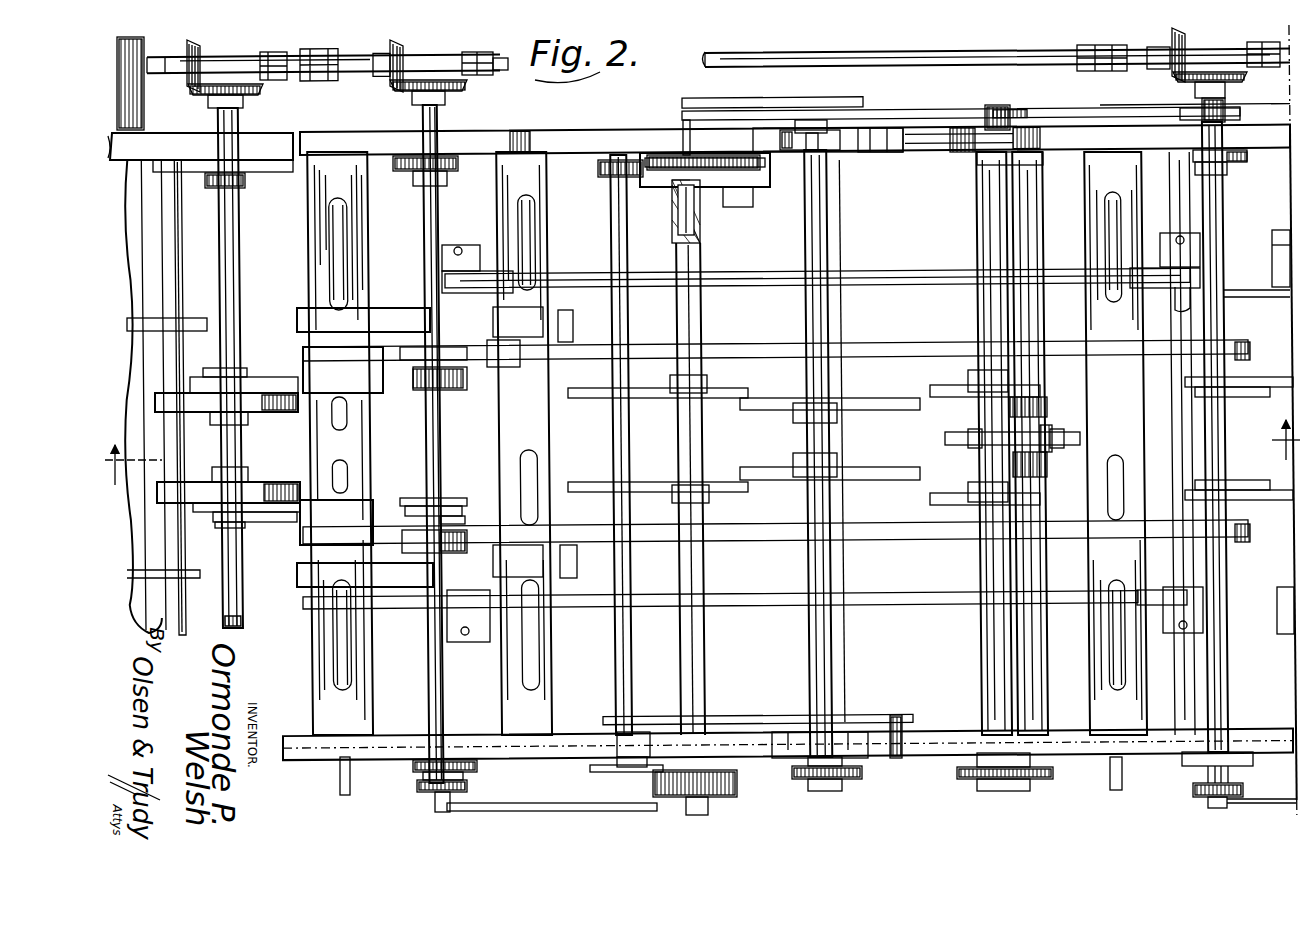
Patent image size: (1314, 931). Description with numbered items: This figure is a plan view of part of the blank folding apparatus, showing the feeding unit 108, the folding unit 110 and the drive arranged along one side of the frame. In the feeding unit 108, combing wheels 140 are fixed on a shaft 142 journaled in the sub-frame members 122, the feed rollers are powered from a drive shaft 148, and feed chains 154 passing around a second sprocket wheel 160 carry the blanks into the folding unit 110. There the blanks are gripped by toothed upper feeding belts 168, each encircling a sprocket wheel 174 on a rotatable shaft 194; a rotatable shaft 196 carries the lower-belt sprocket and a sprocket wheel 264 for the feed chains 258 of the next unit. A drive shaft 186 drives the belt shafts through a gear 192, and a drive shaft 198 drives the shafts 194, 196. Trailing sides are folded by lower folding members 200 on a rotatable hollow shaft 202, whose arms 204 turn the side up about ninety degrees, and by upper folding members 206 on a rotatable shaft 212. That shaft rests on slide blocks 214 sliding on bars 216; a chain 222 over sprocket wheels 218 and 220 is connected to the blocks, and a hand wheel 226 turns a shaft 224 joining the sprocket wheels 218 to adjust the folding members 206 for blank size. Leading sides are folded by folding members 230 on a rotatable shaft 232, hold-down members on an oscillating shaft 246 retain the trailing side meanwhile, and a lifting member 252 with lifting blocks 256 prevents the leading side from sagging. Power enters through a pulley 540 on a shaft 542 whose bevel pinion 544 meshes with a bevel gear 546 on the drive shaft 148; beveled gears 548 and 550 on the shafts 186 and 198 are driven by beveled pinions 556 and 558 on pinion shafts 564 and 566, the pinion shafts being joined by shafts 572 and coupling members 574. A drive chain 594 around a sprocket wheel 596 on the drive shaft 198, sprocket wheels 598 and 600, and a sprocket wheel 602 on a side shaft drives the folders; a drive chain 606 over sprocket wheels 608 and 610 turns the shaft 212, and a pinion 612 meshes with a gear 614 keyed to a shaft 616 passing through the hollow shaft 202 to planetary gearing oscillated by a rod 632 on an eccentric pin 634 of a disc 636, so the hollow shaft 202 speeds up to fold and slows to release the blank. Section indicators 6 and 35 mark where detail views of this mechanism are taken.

The section line 6- 6 is at (702, 460).
The direction arrow 35 is at (702, 142).
The feeding unit 108 is at (236, 655).
The folding unit 110 is at (950, 780).
The sub-frame members 122 is at (173, 136).
The combing wheels 140 is at (266, 393).
The shaft 142 is at (241, 294).
The drive shaft 148 is at (238, 120).
The feed chains 154 is at (195, 377).
The second sprocket wheel 160 is at (452, 498).
The upper feeding belts 168 is at (398, 310).
The sprocket wheel 174 is at (1230, 594).
The drive shaft 186 is at (423, 122).
The gear 192 is at (401, 178).
The rotatable shaft 194 is at (1220, 218).
The rotatable shaft 196 is at (1203, 458).
The drive shaft 198 is at (1214, 106).
The lower folding members 200 is at (712, 383).
The rotatable hollow shaft 202 is at (700, 323).
The blank engaging and folding arms 204 is at (588, 395).
The upper folding members 206 is at (842, 415).
The rotatable shaft 212 is at (829, 634).
The slide blocks 214 is at (851, 152).
The bars 216 is at (487, 134).
The sprocket wheel 218 is at (603, 177).
The sprocket wheel 220 is at (906, 153).
The chain 222 is at (842, 162).
The shaft 224 is at (622, 648).
The hand wheel 226 is at (628, 772).
The folding members 230 is at (965, 382).
The rotatable shaft 232 is at (975, 232).
The oscillating shaft 246 is at (1038, 224).
The lifting member 252 is at (958, 454).
The lifting blocks 256 is at (950, 436).
The feed chains 258 is at (1285, 388).
The sprocket wheel 264 is at (1196, 390).
The pulley 540 is at (200, 383).
The shaft 542 is at (153, 78).
The bevel pinion 544 is at (201, 47).
The bevel gear 546 is at (250, 90).
The beveled gear 548 is at (395, 95).
The beveled gear 550 is at (1228, 82).
The beveled pinion 556 is at (392, 72).
The beveled pinion 558 is at (1172, 36).
The pinion shaft 564 is at (426, 62).
The pinion shaft 566 is at (1200, 60).
The shafts 572 is at (318, 53).
The coupling members 574 is at (274, 53).
The drive chain 594 is at (1173, 91).
The sprocket wheel 596 is at (1197, 116).
The sprocket wheel 598 is at (1018, 108).
The sprocket wheel 600 is at (977, 112).
The sprocket wheel 602 is at (684, 120).
The drive chain 606 is at (774, 98).
The sprocket wheel 608 is at (726, 98).
The sprocket wheel 610 is at (816, 110).
The pinion 612 is at (775, 188).
The gear 614 is at (661, 171).
The shaft 616 is at (698, 224).
The rod 632 is at (560, 803).
The eccentric pin 634 is at (467, 812).
The disc 636 is at (417, 800).